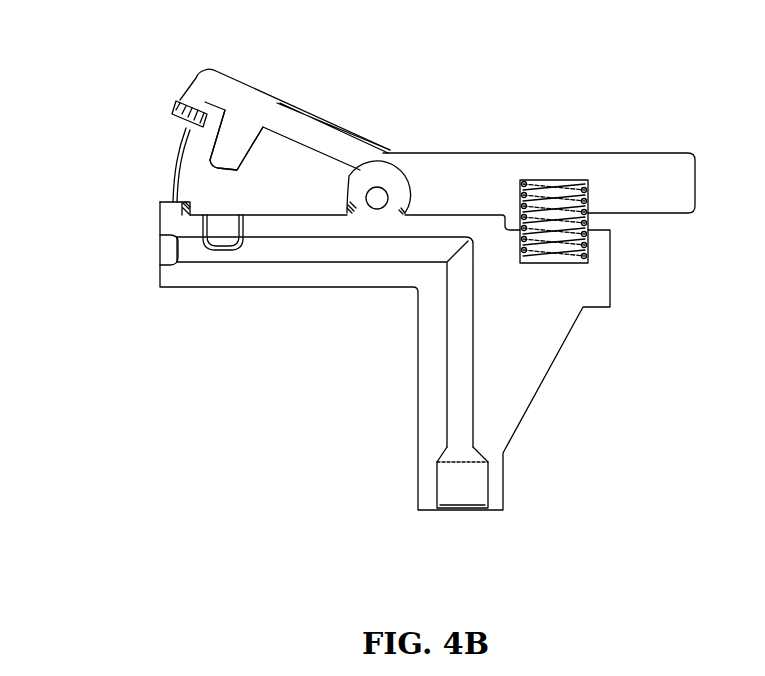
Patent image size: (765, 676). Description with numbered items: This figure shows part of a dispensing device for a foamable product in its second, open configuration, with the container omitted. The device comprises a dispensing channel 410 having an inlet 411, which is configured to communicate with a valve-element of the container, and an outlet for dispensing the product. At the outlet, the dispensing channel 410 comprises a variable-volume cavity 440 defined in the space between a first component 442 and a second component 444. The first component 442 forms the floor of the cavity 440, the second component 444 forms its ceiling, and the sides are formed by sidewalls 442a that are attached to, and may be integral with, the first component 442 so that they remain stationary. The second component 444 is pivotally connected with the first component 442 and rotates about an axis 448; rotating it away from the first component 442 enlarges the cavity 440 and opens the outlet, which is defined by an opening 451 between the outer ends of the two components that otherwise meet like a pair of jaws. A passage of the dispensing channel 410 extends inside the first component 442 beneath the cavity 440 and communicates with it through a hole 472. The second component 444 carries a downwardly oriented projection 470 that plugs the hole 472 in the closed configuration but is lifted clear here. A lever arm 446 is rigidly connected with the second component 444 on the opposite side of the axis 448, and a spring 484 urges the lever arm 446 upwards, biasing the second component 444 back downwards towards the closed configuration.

The dispensing channel 410 is at (373, 250).
The inlet 411 is at (440, 485).
The variable-volume cavity 440 is at (305, 162).
The first component 442 is at (175, 218).
The sidewalls 442a is at (302, 110).
The second component 444 is at (193, 105).
The lever arm 446 is at (625, 163).
The axis 448 is at (372, 188).
The opening 451 is at (188, 173).
The downwardly oriented projection 470 is at (237, 160).
The hole 472 is at (225, 248).
The spring 484 is at (585, 245).